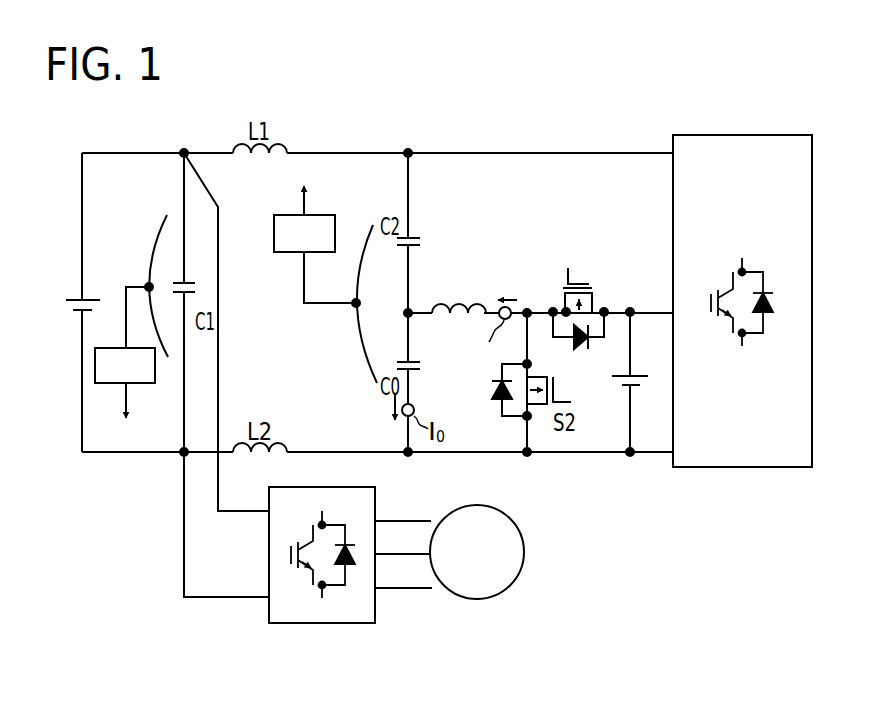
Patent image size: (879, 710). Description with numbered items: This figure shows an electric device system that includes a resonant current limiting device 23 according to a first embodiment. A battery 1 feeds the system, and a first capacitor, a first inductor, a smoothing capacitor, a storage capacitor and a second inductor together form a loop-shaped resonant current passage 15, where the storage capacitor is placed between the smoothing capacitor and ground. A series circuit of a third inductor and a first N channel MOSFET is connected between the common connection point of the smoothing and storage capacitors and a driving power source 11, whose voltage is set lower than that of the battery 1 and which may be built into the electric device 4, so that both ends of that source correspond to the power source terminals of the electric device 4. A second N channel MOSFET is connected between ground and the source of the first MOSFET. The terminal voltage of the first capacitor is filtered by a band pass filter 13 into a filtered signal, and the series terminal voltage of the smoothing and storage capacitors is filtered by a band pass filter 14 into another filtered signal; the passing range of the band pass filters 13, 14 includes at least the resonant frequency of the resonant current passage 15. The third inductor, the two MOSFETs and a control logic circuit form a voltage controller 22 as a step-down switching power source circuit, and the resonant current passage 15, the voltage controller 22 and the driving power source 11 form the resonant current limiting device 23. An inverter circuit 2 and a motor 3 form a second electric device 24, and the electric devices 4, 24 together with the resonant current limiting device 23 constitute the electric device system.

The battery 1 is at (75, 310).
The inverter circuit 2 is at (320, 625).
The motor 3 is at (525, 552).
The electric device 4 is at (741, 135).
The driving power source 11 is at (648, 384).
The band pass filter 13 is at (145, 386).
The band pass filter 14 is at (274, 232).
The resonant current passage 15 is at (210, 146).
The voltage controller 22 is at (598, 270).
The resonant current limiting device 23 is at (514, 262).
The electric device 24 is at (409, 610).